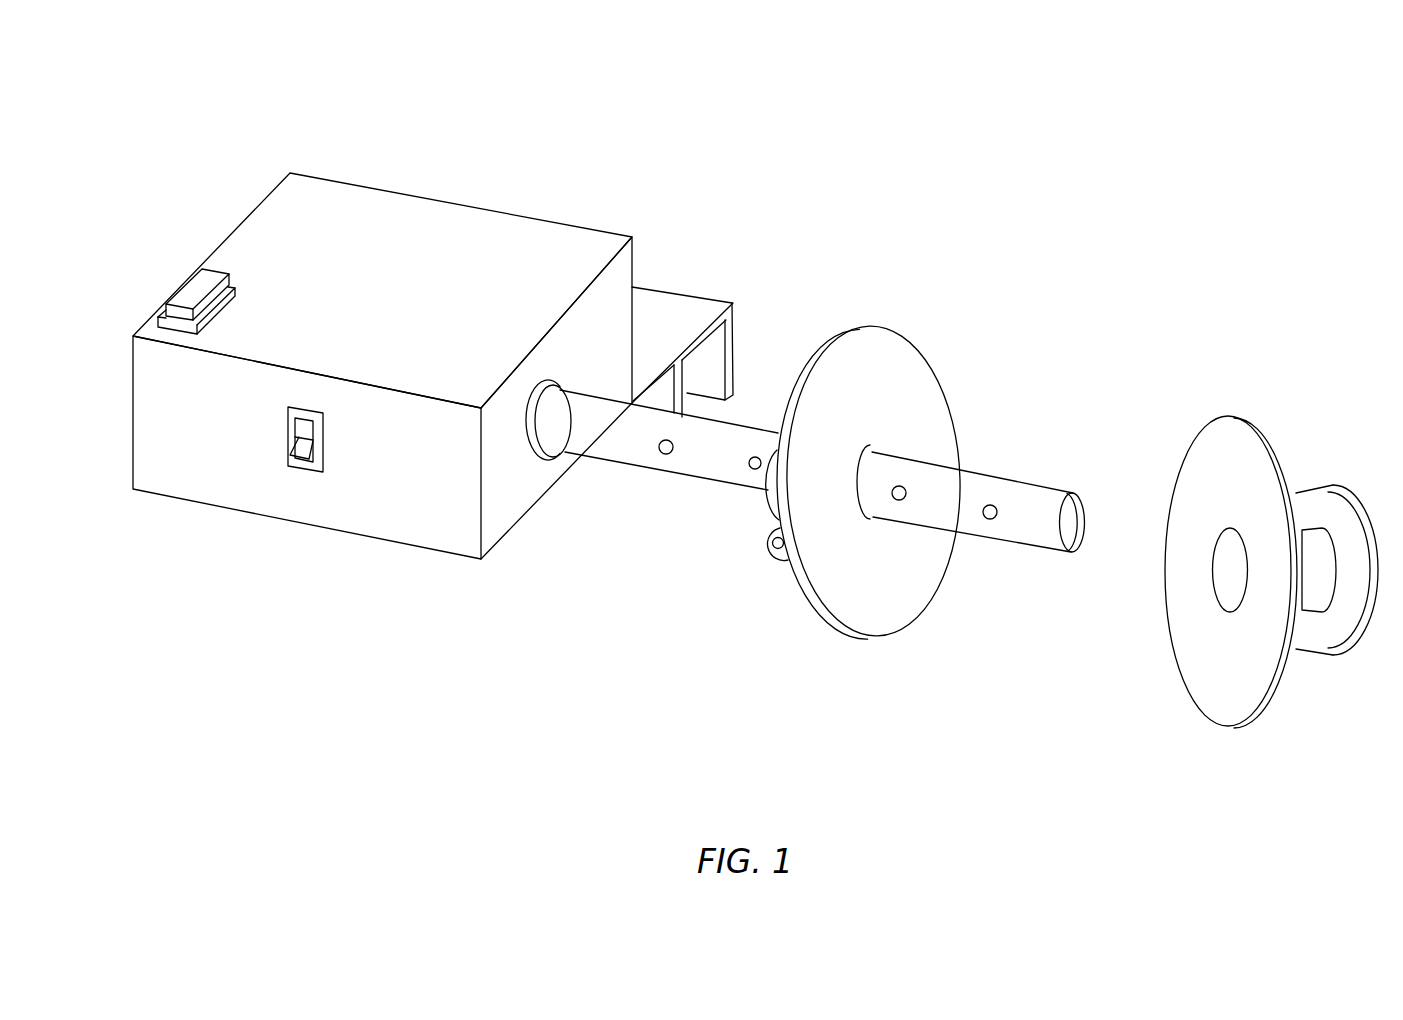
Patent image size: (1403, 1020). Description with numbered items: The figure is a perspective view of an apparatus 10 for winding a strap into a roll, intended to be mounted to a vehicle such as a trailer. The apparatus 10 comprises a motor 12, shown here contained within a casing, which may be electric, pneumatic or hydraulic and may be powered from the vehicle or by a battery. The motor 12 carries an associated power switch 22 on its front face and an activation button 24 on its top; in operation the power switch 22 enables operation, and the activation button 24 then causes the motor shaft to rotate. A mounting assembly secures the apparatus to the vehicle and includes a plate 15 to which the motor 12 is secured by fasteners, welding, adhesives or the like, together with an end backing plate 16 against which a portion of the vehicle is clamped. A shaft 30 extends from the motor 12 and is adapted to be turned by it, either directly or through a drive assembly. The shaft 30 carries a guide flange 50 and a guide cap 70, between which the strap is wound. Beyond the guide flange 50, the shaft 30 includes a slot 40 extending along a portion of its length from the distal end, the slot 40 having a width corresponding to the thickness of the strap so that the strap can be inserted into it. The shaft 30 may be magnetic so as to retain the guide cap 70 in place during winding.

The apparatus for winding a strap 10 is at (831, 206).
The motor 12 is at (450, 203).
The plate 15 is at (693, 293).
The end backing plate 16 is at (738, 359).
The power switch 22 is at (300, 467).
The activation button 24 is at (187, 282).
The shaft 30 is at (658, 468).
The slot 40 is at (977, 460).
The guide flange 50 is at (883, 327).
The guide cap 70 is at (1231, 419).